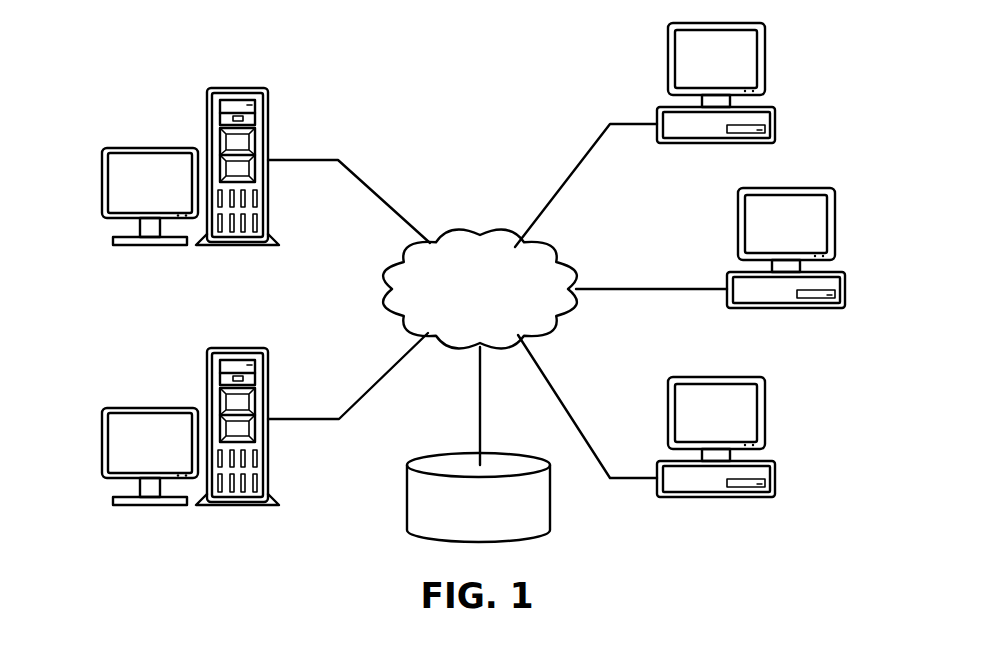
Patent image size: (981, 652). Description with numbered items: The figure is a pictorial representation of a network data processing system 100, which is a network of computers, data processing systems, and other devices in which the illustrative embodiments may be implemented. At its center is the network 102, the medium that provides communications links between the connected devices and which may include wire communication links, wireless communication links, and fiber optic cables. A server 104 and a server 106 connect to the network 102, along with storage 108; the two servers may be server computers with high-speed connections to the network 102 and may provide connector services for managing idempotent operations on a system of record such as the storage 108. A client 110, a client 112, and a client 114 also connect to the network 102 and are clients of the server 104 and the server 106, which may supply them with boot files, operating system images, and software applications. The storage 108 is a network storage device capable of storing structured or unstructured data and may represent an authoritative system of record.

The network data processing system 100 is at (338, 60).
The network 102 is at (452, 234).
The server 104 is at (102, 185).
The server 106 is at (102, 443).
The storage 108 is at (407, 503).
The client 110 is at (775, 118).
The client 112 is at (847, 297).
The client 114 is at (775, 487).